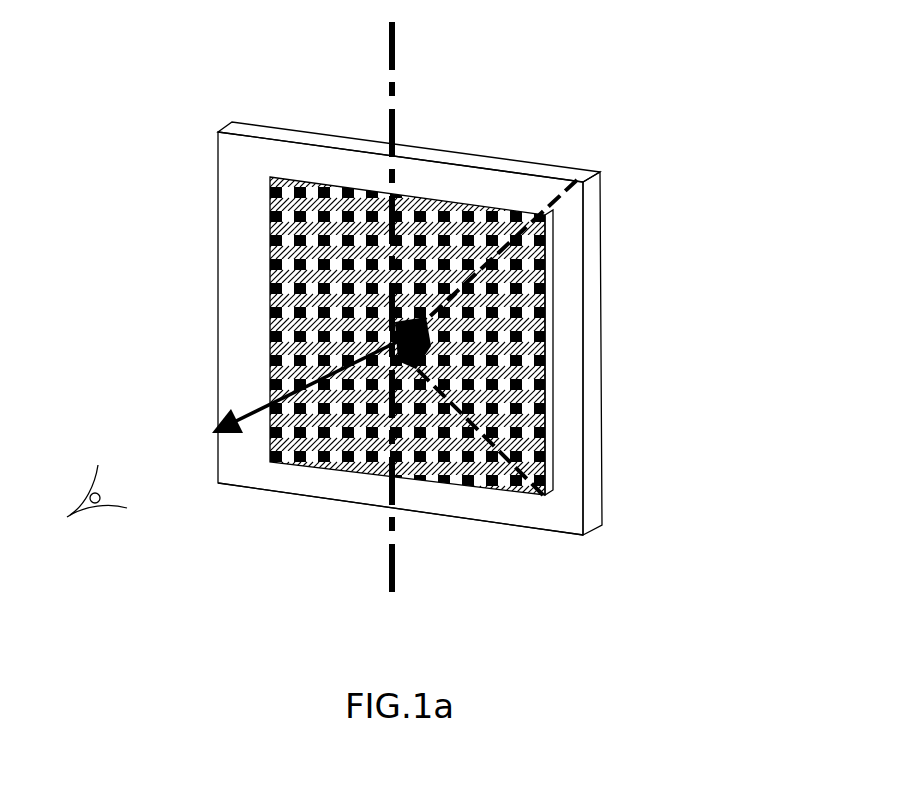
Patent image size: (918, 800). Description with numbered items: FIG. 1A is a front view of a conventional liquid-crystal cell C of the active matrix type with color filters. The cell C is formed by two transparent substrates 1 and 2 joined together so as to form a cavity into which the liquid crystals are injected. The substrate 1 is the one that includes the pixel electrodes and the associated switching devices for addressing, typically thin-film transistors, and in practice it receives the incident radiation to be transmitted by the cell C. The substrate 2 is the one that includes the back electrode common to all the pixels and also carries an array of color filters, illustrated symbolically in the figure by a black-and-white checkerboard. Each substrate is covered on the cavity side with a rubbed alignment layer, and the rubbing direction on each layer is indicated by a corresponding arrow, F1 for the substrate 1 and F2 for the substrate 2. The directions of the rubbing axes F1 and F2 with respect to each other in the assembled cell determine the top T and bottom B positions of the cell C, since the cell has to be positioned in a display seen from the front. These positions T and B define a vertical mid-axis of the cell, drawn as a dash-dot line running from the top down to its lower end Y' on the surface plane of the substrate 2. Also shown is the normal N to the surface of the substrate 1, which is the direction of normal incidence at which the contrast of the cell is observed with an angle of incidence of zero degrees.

The transparent substrate 1 is at (497, 330).
The transparent substrate 2 is at (505, 491).
The top position T is at (457, 157).
The bottom position B is at (328, 503).
The cell C is at (660, 190).
The normal N is at (310, 387).
The rubbing direction arrow F1 is at (545, 210).
The rubbing direction arrow F2 is at (543, 440).
The vertical mid-axis end Y' is at (395, 323).